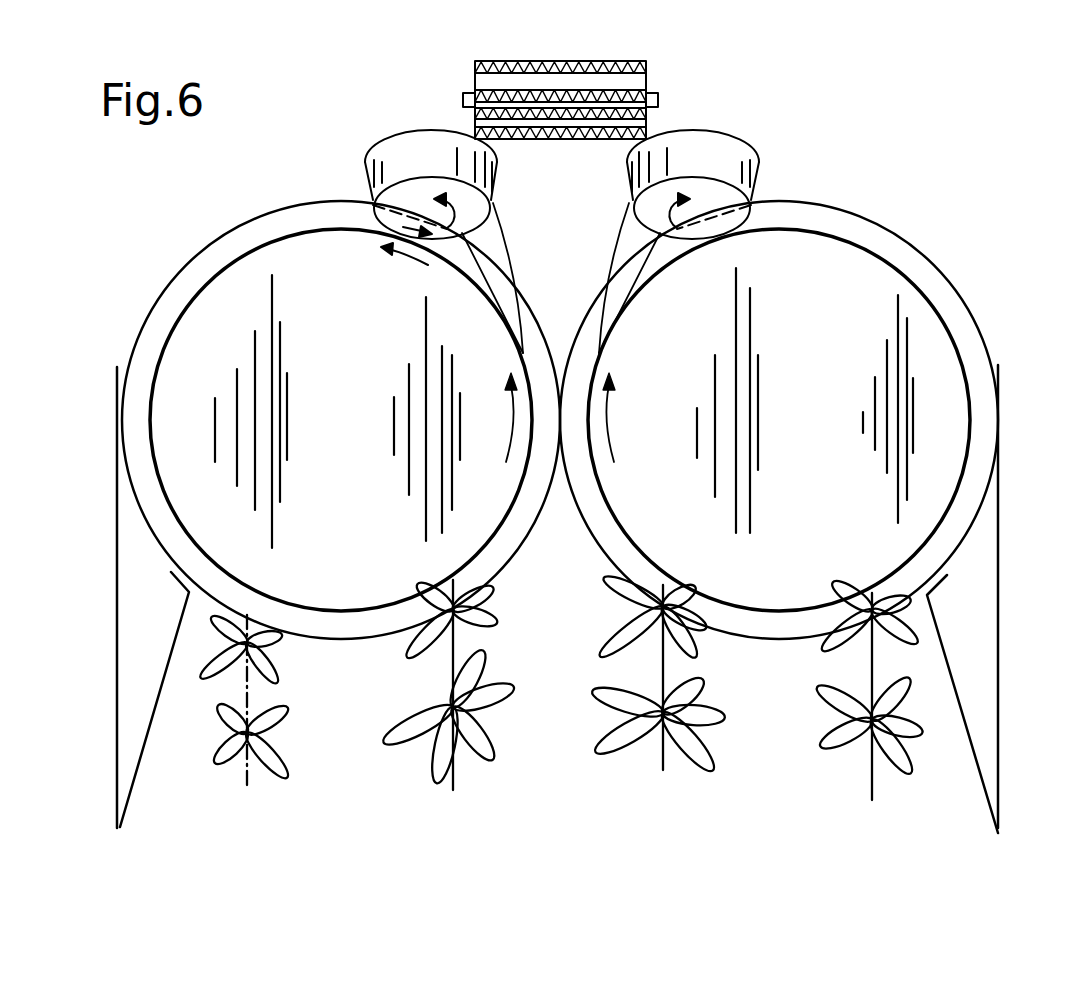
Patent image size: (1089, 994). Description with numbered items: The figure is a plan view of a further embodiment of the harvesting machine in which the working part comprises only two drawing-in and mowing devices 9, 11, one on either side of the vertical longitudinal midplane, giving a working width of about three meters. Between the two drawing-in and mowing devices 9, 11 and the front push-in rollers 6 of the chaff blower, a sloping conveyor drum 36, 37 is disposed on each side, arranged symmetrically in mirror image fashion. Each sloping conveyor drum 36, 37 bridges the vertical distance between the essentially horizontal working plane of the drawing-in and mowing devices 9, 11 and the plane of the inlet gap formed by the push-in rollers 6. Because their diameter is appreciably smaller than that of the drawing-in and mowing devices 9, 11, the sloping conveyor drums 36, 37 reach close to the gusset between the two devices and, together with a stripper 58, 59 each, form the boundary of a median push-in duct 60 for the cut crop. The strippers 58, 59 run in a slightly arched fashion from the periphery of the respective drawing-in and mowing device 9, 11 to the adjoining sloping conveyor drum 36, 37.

The push-in rollers 6 is at (497, 84).
The sloping conveyor drum 36 is at (395, 147).
The sloping conveyor drum 37 is at (742, 147).
The median push-in duct 60 is at (585, 215).
The drawing-in and mowing device 9 is at (200, 324).
The drawing-in and mowing device 11 is at (938, 348).
The stripper 58 is at (515, 298).
The stripper 59 is at (607, 292).